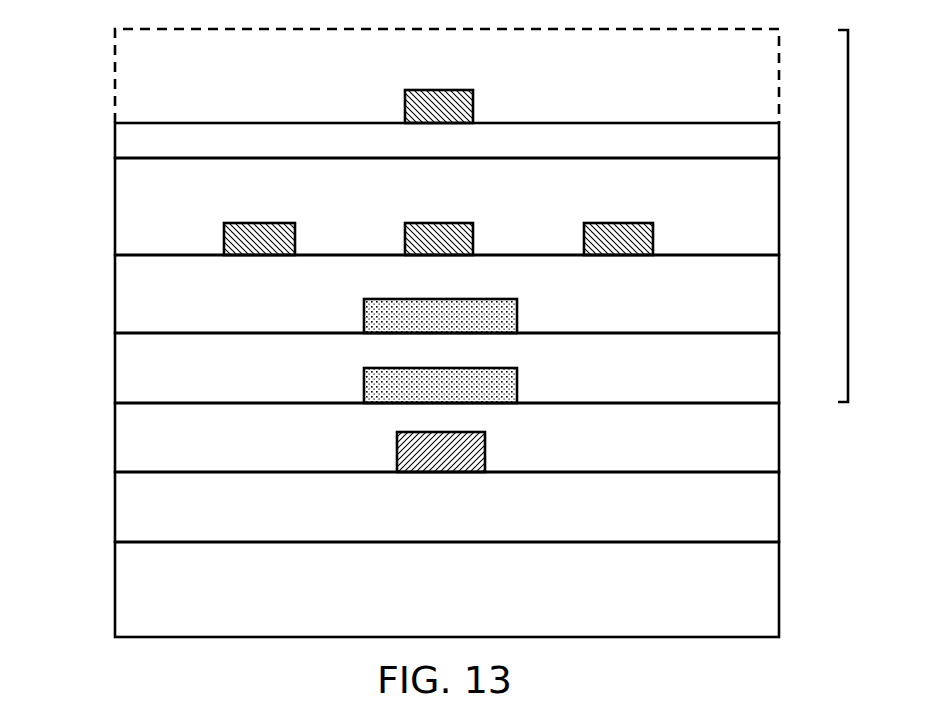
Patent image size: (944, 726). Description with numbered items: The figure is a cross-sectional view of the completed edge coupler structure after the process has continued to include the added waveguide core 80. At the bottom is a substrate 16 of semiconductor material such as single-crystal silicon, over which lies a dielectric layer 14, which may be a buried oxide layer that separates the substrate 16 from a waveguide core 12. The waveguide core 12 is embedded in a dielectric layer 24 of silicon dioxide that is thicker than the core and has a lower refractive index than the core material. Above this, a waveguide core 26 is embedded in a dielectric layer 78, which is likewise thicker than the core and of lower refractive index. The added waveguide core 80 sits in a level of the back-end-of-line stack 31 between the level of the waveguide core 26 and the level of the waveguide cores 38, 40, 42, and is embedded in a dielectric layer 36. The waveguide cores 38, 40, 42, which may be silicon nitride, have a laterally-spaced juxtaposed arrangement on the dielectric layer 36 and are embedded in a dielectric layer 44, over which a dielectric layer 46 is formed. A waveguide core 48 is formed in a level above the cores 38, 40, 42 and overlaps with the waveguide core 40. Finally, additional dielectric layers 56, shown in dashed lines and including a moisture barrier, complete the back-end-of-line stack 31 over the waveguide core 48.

The waveguide core 12 is at (458, 452).
The dielectric layer 14 is at (732, 517).
The substrate 16 is at (740, 588).
The dielectric layer 24 is at (159, 442).
The waveguide core 26 is at (478, 392).
The back-end-of-line stack 31 is at (848, 214).
The dielectric layer 36 is at (155, 297).
The waveguide core 38 is at (268, 243).
The waveguide core 40 is at (446, 243).
The waveguide core 42 is at (633, 241).
The dielectric layer 44 is at (157, 229).
The dielectric layer 46 is at (155, 155).
The waveguide core 48 is at (445, 111).
The dielectric layer 56 is at (157, 87).
The dielectric layer 78 is at (160, 373).
The waveguide core 80 is at (478, 314).